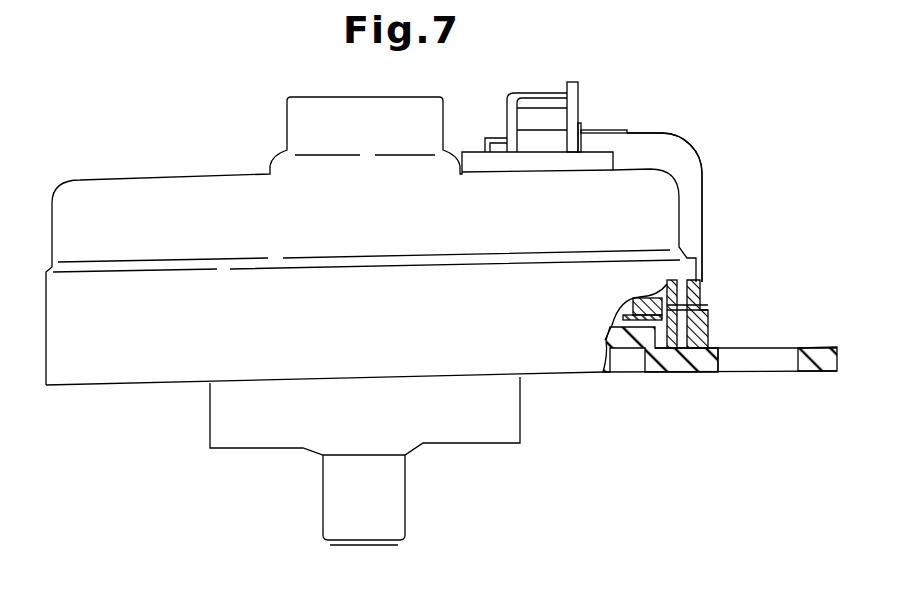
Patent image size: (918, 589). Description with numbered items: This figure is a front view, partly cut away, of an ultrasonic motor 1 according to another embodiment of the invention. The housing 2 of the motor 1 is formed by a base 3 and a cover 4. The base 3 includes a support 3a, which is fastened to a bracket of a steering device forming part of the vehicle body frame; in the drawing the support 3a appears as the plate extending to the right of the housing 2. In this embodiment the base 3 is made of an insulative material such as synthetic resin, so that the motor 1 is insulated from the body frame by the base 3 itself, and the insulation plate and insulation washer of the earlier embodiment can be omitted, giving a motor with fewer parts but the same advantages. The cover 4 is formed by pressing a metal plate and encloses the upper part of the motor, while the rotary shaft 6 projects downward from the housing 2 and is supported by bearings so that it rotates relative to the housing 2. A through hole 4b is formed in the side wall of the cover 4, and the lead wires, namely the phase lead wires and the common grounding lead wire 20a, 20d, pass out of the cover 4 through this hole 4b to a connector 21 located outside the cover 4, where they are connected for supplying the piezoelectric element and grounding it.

The ultrasonic motor 1 is at (113, 145).
The housing 2 is at (110, 386).
The base 3 is at (695, 373).
The support 3a is at (813, 372).
The cover 4 is at (214, 178).
The through hole 4b is at (703, 303).
The rotary shaft 6 is at (398, 522).
The lead wire 20a is at (715, 115).
The common grounding lead wire 20d is at (682, 153).
The connector 21 is at (541, 103).